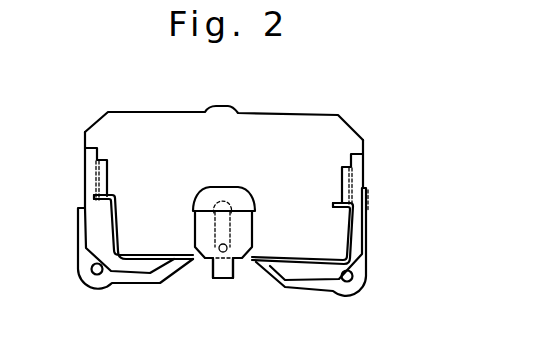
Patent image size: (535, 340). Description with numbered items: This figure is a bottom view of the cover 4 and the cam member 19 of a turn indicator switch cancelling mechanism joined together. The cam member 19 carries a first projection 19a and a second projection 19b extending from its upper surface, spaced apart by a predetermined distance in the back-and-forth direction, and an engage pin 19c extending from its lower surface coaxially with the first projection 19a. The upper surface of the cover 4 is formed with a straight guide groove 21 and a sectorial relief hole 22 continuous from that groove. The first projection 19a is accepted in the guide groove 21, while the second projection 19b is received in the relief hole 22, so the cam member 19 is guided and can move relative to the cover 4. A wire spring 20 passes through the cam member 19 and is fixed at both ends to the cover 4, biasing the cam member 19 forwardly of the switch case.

The cover 4 is at (352, 124).
The cam member 19 is at (231, 236).
The first projection 19a is at (231, 236).
The second projection 19b is at (232, 208).
The engage pin 19c is at (230, 253).
The spring 20 is at (337, 238).
The straight guide groove 21 is at (230, 232).
The sectorial relief hole 22 is at (234, 190).